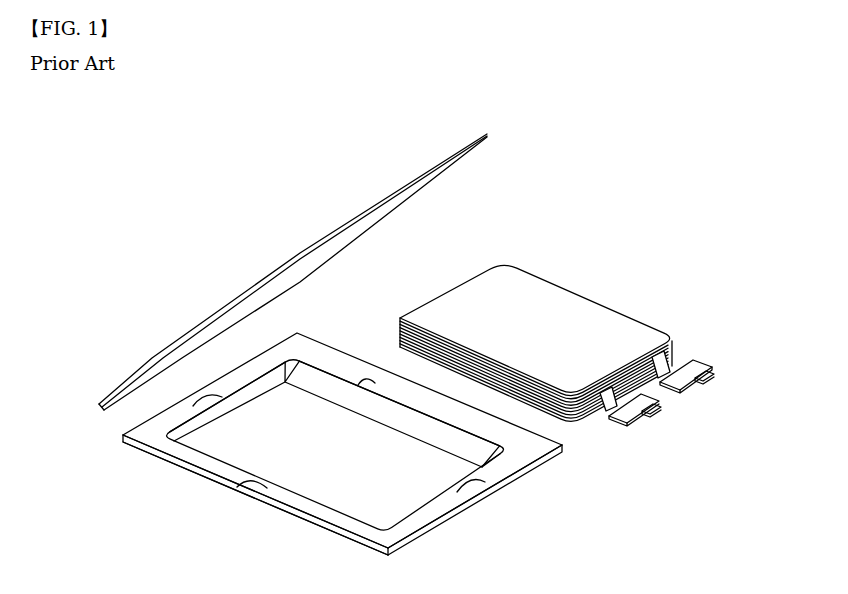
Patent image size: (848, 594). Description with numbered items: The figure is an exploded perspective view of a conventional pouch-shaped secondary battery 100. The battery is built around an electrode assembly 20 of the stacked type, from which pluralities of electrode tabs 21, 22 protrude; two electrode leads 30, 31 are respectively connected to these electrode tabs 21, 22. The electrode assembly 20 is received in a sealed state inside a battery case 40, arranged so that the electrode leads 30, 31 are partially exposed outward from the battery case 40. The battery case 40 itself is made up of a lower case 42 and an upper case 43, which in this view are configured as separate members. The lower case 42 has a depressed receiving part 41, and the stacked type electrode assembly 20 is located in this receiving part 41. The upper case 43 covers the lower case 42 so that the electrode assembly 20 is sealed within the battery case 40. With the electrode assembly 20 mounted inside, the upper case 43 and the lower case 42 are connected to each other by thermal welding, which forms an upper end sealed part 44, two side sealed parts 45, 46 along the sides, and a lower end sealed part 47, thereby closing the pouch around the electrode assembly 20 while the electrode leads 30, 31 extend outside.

The pouch-shaped secondary battery 100 is at (49, 127).
The electrode assembly 20 is at (590, 345).
The electrode tab 21 is at (655, 357).
The electrode tab 22 is at (603, 392).
The electrode lead 30 is at (714, 380).
The electrode lead 31 is at (659, 413).
The battery case 40 is at (48, 484).
The receiving part 41 is at (345, 457).
The lower case 42 is at (140, 453).
The upper case 43 is at (98, 405).
The upper end sealed part 44 is at (487, 491).
The side sealed part 45 is at (360, 384).
The side sealed part 46 is at (237, 487).
The lower end sealed part 47 is at (223, 398).